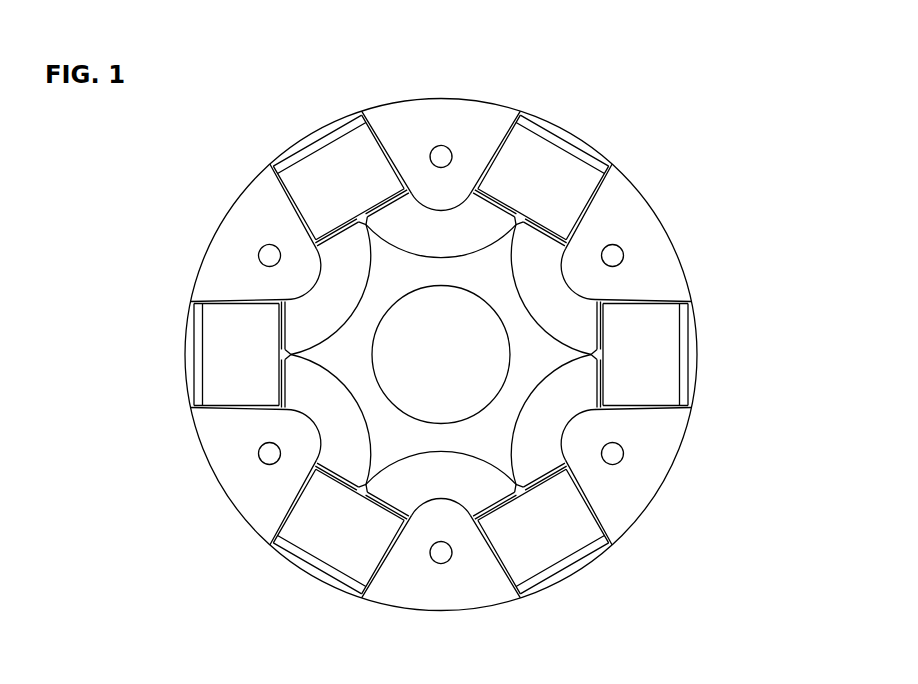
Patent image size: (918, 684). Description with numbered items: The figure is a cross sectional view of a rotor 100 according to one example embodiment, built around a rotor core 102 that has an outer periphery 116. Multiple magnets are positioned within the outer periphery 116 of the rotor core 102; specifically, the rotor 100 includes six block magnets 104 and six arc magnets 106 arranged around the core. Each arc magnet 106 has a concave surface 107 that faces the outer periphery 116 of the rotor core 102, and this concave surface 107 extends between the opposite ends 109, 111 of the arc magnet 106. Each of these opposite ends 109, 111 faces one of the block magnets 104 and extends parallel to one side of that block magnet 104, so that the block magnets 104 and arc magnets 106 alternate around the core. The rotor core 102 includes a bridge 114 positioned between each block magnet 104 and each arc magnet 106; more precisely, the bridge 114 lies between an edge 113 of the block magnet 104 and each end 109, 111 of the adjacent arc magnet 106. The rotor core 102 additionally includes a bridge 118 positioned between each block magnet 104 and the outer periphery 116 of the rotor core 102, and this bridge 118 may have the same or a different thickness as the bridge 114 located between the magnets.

The rotor 100 is at (655, 122).
The rotor core 102 is at (655, 243).
The block magnet 104 is at (220, 316).
The arc magnet 106 is at (310, 407).
The concave surface 107 is at (285, 414).
The end of arc magnet 109 is at (284, 383).
The end of arc magnet 111 is at (335, 578).
The edge of block magnet 113 is at (278, 355).
The bridge 114 is at (245, 492).
The outer periphery 116 is at (236, 200).
The bridge 118 is at (187, 360).